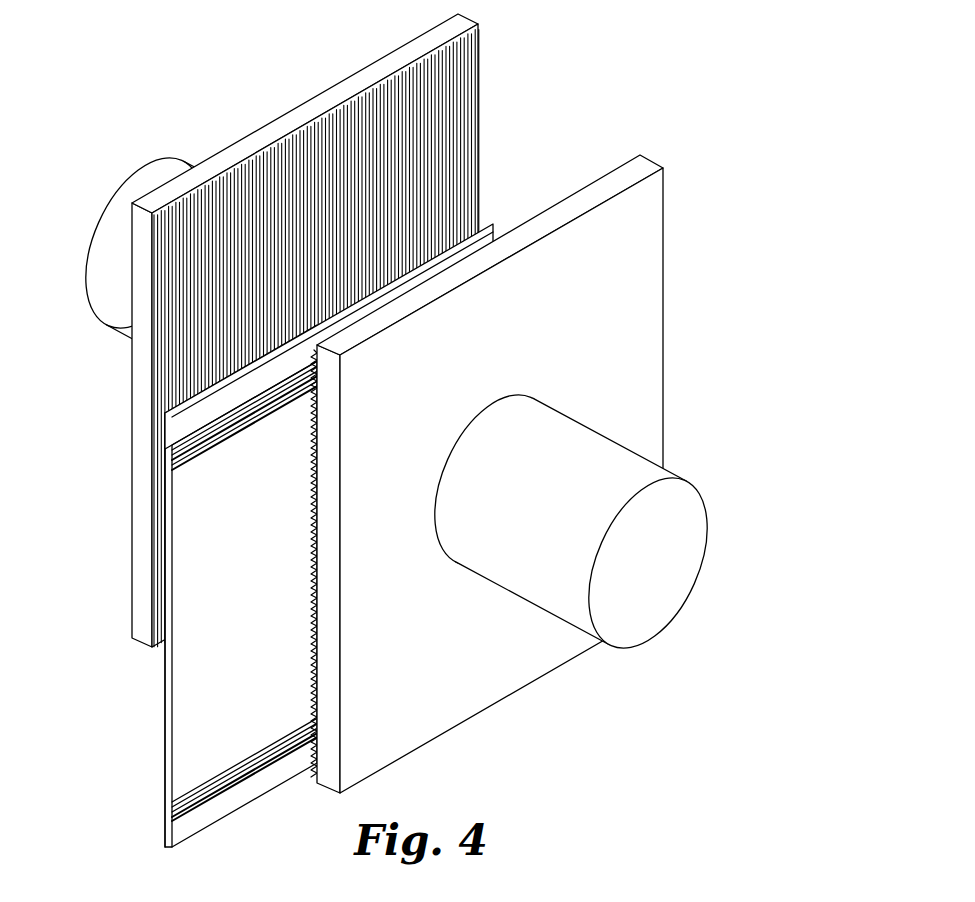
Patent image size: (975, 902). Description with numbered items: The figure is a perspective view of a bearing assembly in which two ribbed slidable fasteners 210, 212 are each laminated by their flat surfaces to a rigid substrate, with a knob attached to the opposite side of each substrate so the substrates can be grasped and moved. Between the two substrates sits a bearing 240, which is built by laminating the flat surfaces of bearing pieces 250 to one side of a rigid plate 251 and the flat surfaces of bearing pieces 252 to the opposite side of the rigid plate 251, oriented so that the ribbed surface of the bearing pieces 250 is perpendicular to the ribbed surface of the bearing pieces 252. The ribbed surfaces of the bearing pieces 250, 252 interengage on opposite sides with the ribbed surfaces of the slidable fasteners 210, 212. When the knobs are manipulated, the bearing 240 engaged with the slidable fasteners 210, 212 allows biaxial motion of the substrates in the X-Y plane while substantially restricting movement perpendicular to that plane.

The slidable fastener 210 is at (307, 410).
The slidable fastener 212 is at (482, 87).
The bearing 240 is at (183, 735).
The bearing pieces 250 is at (177, 467).
The rigid plate 251 is at (165, 673).
The bearing pieces 252 is at (180, 406).